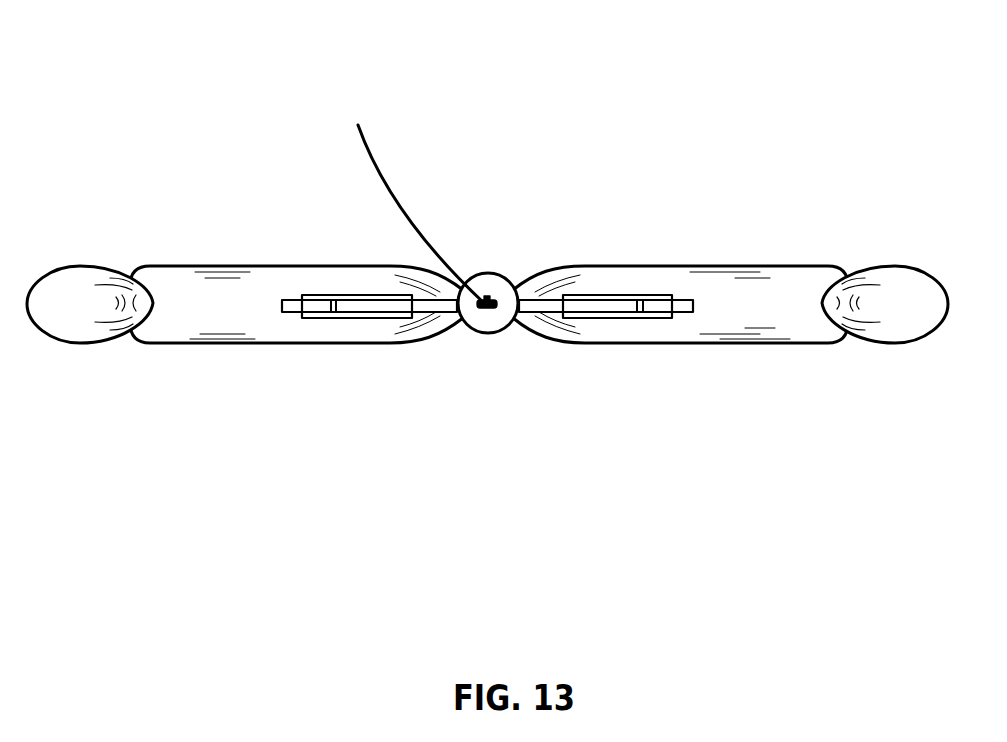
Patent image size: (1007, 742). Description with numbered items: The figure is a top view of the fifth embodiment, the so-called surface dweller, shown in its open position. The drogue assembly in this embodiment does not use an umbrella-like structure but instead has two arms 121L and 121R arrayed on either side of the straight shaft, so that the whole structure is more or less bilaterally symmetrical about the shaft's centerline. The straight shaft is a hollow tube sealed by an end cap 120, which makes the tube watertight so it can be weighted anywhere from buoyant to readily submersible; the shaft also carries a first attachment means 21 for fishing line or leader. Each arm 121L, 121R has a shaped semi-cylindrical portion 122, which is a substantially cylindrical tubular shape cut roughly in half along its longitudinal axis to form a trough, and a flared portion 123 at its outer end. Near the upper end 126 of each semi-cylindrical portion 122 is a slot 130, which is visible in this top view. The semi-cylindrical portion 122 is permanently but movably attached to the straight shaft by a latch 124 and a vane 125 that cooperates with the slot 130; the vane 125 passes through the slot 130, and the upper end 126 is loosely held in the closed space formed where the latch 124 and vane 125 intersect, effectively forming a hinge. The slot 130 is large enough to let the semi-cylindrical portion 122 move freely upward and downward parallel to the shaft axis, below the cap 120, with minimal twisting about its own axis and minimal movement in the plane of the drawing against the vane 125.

The left arm 121L is at (196, 160).
The right arm 121R is at (730, 312).
The first attachment means 21 is at (502, 265).
The slot 130 is at (608, 298).
The end cap 120 is at (480, 322).
The upper end 126 is at (528, 320).
The latch 124 is at (548, 308).
The vane 125 is at (668, 308).
The semi-cylindrical portion 122 is at (787, 312).
The flared portion 123 is at (903, 310).